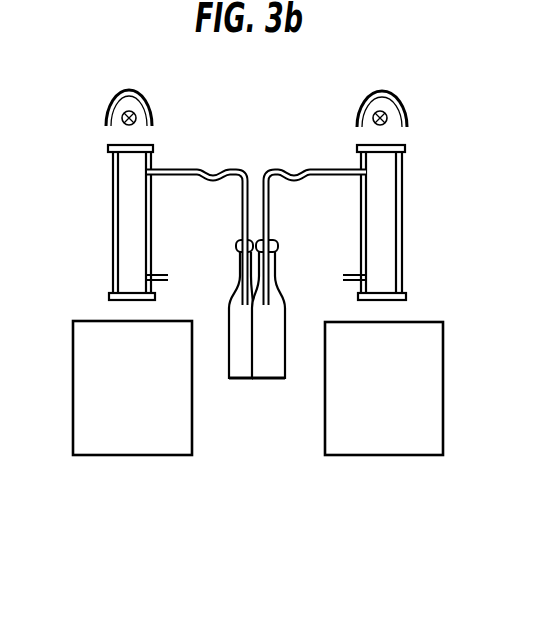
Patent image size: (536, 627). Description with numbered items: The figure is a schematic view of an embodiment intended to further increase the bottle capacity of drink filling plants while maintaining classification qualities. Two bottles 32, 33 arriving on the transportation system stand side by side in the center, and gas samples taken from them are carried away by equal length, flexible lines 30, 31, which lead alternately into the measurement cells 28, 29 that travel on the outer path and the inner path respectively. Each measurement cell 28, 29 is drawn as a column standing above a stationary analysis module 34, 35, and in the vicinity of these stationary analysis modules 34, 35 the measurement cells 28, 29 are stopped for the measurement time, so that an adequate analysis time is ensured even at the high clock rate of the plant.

The measurement cell 28 is at (402, 250).
The measurement cell 29 is at (112, 222).
The flexible line 30 is at (313, 168).
The flexible line 31 is at (205, 168).
The bottle 32 is at (273, 382).
The bottle 33 is at (239, 382).
The stationary analysis module 34 is at (443, 366).
The stationary analysis module 35 is at (73, 366).